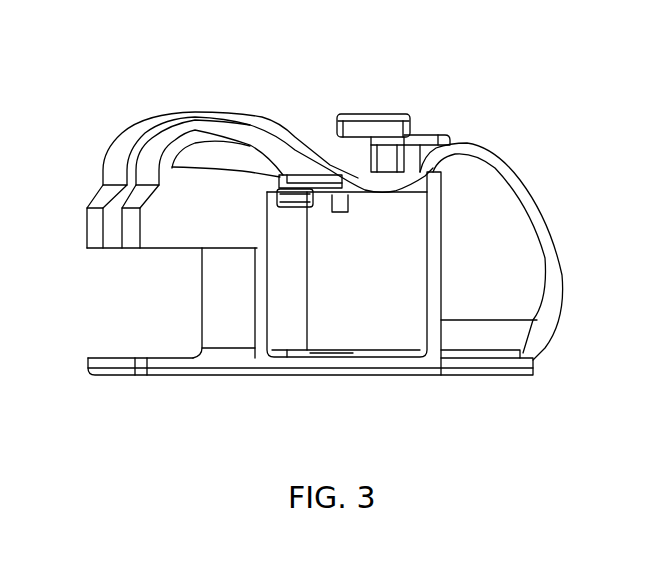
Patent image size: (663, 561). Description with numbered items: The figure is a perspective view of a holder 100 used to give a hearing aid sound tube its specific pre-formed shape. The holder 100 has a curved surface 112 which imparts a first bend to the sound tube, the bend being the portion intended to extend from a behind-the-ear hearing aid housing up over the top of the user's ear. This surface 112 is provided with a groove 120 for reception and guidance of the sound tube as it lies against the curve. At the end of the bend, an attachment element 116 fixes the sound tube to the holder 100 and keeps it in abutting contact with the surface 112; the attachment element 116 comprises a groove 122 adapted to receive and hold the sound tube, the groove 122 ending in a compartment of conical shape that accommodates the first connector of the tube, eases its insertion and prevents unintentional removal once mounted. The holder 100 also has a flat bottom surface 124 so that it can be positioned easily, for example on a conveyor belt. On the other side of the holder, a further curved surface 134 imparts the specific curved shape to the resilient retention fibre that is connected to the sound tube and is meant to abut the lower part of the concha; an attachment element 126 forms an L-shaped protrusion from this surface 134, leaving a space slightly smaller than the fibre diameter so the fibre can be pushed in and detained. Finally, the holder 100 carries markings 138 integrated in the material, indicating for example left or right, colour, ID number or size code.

The holder 100 is at (270, 34).
The surface 112 is at (113, 158).
The groove 120 is at (143, 128).
The groove 122 is at (113, 243).
The attachment element 116 is at (175, 237).
The attachment element 126 is at (371, 127).
The curved surface 134 is at (507, 175).
The flat bottom surface 124 is at (415, 377).
The markings 138 is at (340, 347).